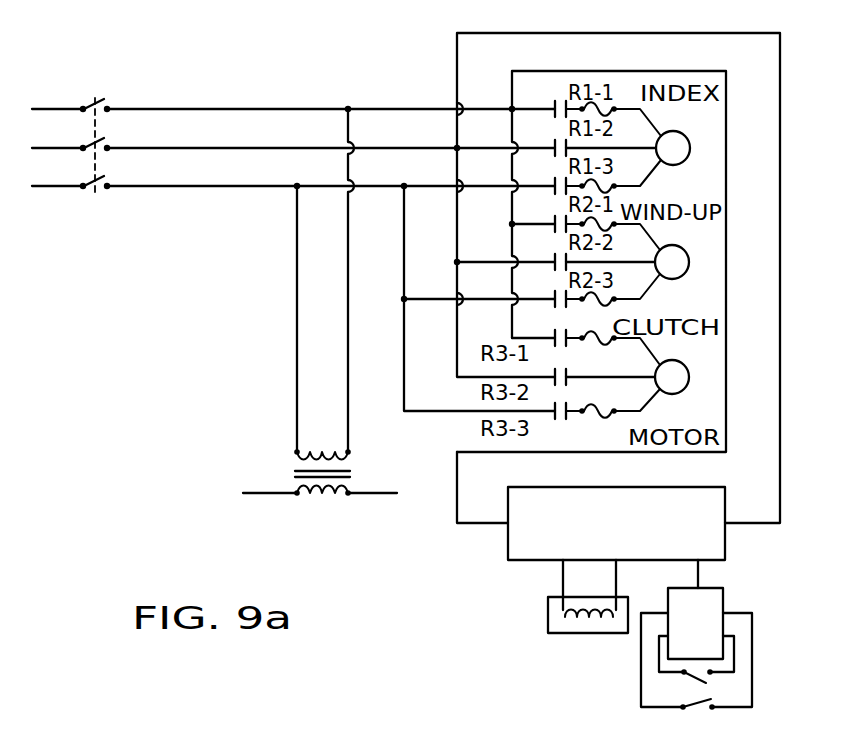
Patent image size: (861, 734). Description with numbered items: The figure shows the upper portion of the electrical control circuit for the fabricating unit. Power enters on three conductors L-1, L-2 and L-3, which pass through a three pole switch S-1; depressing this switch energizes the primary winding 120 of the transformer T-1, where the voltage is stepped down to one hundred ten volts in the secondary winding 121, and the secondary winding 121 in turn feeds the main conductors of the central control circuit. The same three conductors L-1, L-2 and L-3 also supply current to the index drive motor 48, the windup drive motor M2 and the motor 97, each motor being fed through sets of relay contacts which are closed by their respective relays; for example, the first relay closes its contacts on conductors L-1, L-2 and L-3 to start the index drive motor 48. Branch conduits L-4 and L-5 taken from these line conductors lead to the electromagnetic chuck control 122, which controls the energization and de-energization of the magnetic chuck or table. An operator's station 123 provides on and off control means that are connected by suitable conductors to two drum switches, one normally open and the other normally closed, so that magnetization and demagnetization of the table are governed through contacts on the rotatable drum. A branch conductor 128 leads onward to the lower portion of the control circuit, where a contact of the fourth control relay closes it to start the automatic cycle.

The three pole switch S-1 is at (93, 98).
The conductor L-1 is at (165, 109).
The conductor L-2 is at (165, 148).
The conductor L-3 is at (165, 186).
The branch conduit L-4 is at (540, 33).
The branch conduit L-5 is at (595, 71).
The index drive motor 48 is at (690, 114).
The windup drive motor M2 is at (668, 249).
The motor 97 is at (690, 343).
The transformer T-1 is at (286, 469).
The primary winding 120 is at (315, 449).
The secondary winding 121 is at (322, 497).
The control 122 is at (589, 498).
The operator's station 123 is at (723, 603).
The branch conductor 128 is at (113, 722).